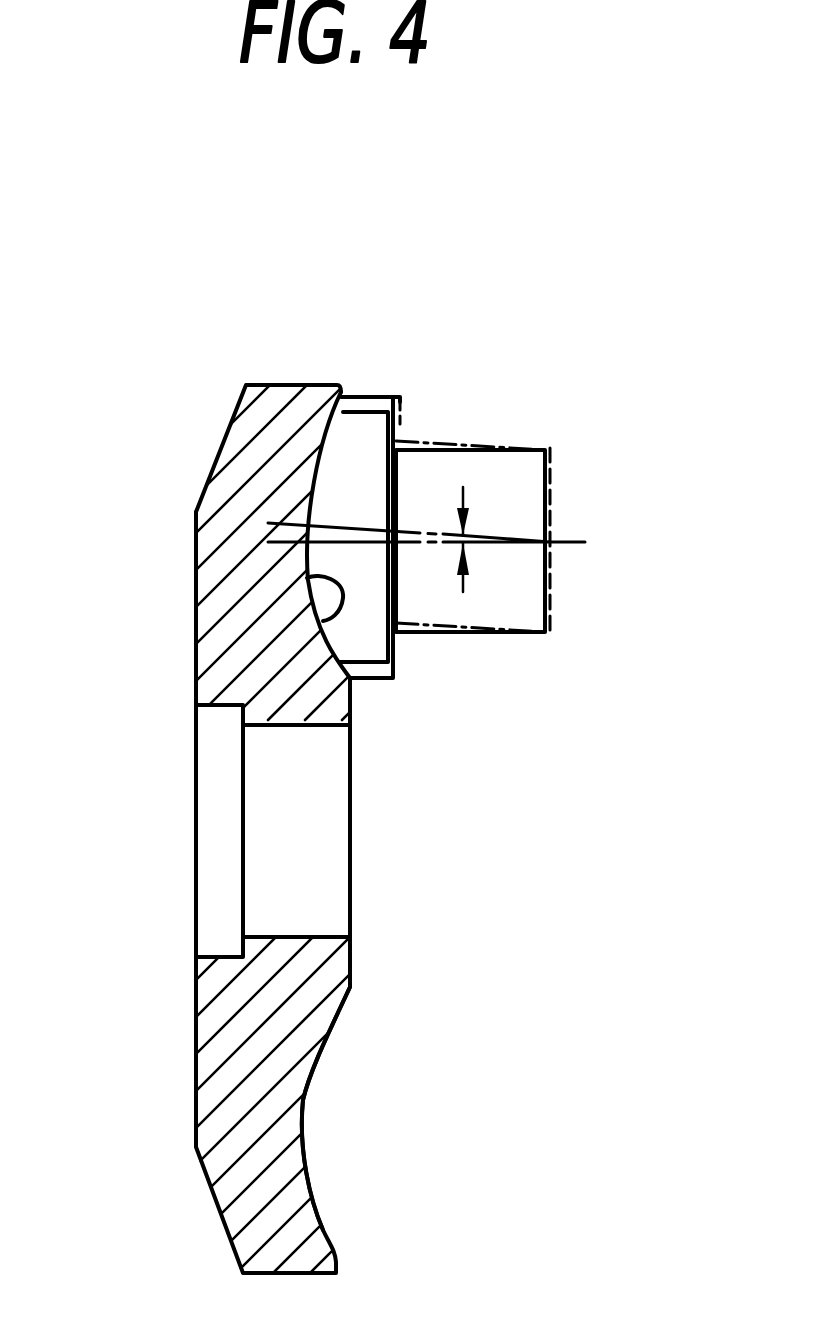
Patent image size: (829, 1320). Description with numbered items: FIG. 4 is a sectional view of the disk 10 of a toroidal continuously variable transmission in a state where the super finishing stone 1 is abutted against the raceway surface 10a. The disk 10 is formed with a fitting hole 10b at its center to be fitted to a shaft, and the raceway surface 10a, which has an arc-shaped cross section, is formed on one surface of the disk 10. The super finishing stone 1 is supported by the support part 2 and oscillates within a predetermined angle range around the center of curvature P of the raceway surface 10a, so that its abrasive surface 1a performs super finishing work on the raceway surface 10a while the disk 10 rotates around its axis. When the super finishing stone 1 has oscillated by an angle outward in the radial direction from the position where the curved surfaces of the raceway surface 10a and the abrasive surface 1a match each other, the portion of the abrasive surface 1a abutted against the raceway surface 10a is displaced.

The disk 10 is at (287, 386).
The raceway surface 10a is at (307, 579).
The fitting hole 10b is at (295, 727).
The super finishing stone 1 is at (373, 679).
The abrasive surface 1a is at (307, 484).
The support part 2 is at (470, 634).
The center of curvature P is at (548, 540).